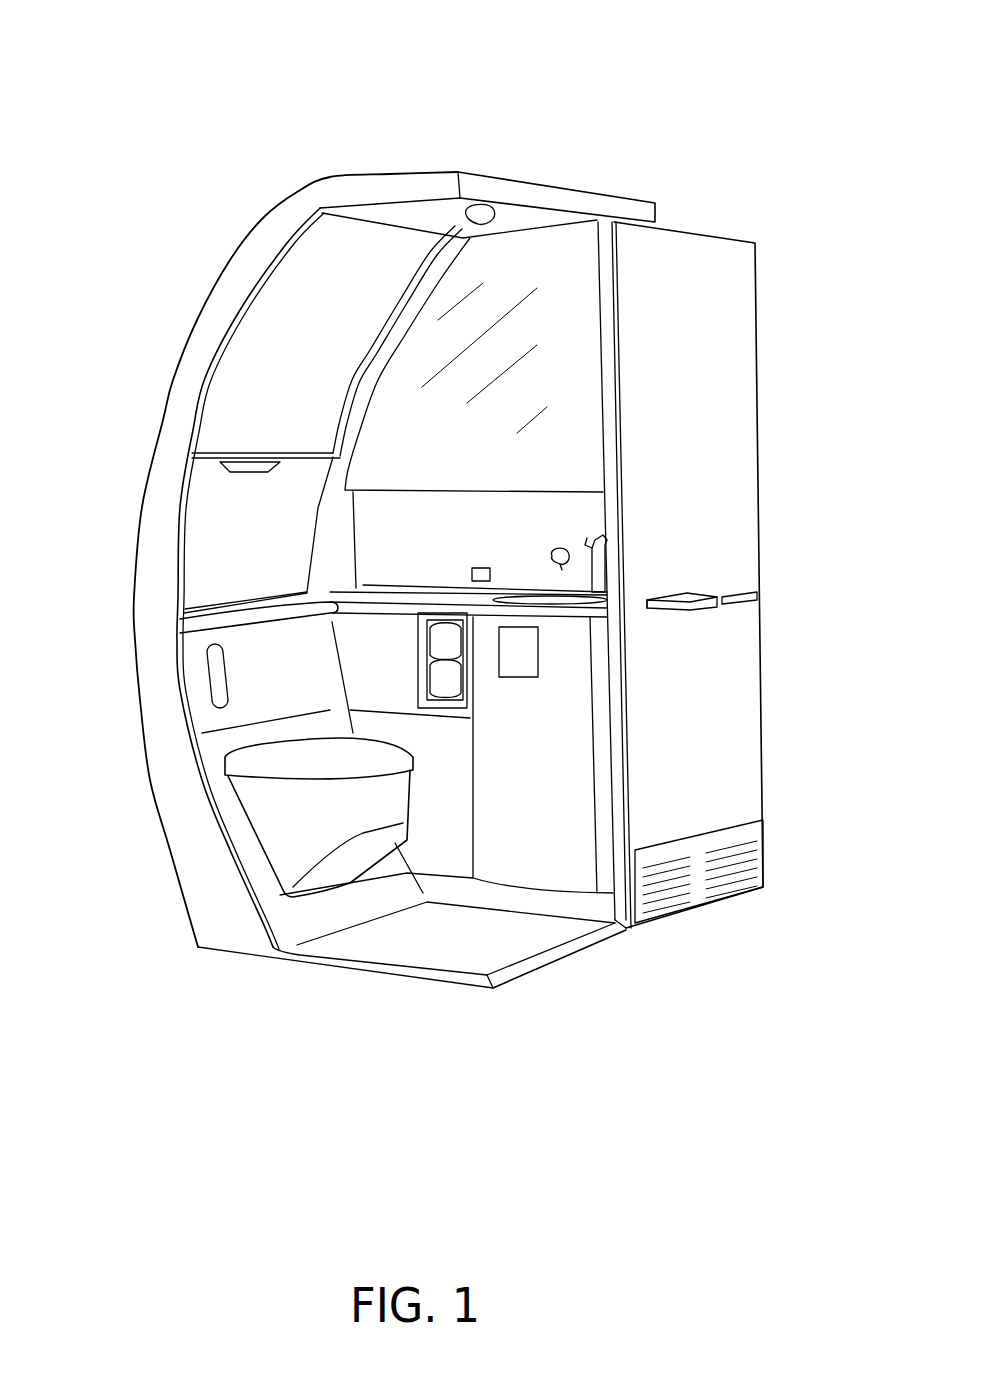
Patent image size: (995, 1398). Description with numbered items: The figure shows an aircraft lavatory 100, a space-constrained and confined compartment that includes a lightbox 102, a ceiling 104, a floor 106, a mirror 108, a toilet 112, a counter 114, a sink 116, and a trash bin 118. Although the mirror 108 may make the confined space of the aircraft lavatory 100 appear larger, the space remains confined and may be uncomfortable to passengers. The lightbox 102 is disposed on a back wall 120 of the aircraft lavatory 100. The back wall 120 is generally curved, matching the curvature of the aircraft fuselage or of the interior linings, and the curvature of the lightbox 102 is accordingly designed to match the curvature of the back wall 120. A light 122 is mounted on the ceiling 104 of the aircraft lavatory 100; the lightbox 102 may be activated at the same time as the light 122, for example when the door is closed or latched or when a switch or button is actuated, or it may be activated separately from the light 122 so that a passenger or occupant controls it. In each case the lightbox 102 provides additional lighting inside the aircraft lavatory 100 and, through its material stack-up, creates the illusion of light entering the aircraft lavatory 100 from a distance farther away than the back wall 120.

The aircraft lavatory 100 is at (104, 102).
The lightbox 102 is at (275, 365).
The ceiling 104 is at (373, 186).
The floor 106 is at (482, 955).
The mirror 108 is at (568, 250).
The toilet 112 is at (277, 812).
The counter 114 is at (443, 597).
The sink 116 is at (558, 597).
The trash bin 118 is at (752, 362).
The back wall 120 is at (200, 530).
The light 122 is at (483, 205).